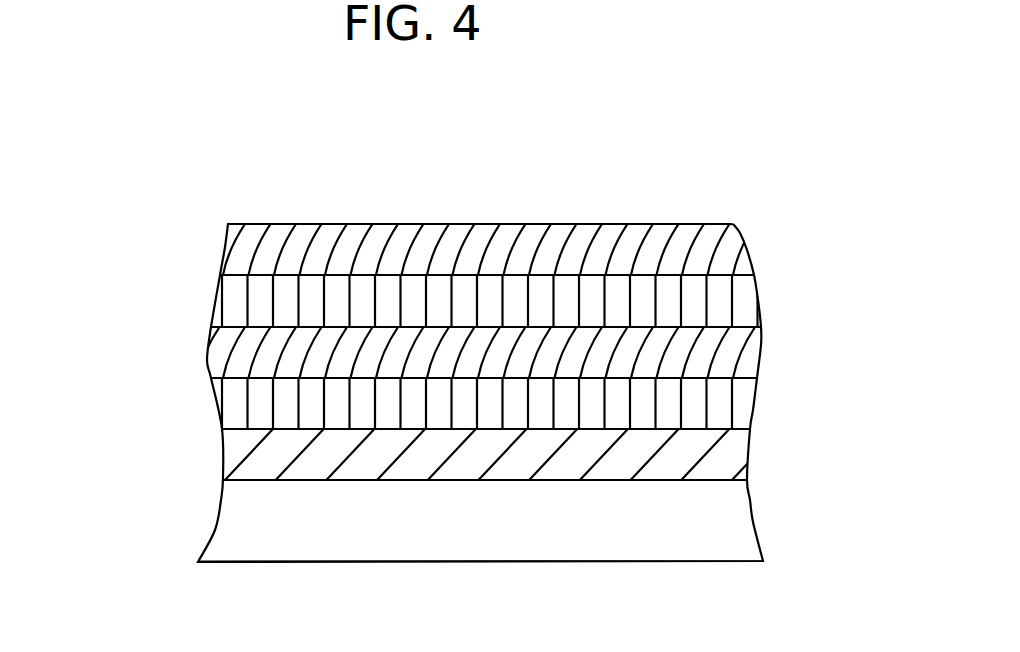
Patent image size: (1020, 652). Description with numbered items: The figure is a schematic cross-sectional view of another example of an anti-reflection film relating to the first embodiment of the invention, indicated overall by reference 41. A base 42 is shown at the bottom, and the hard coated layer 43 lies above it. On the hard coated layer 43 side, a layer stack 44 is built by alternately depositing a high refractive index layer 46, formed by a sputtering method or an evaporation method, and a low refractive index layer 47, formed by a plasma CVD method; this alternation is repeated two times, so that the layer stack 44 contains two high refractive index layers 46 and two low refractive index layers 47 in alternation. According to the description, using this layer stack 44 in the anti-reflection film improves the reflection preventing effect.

The recording medium 41 is at (713, 147).
The substrate 42 is at (737, 522).
The hard coated layer 43 is at (737, 450).
The layer stack 44 is at (125, 225).
The high refractive index layer 46 is at (233, 301).
The low refractive index layer 47 is at (228, 251).